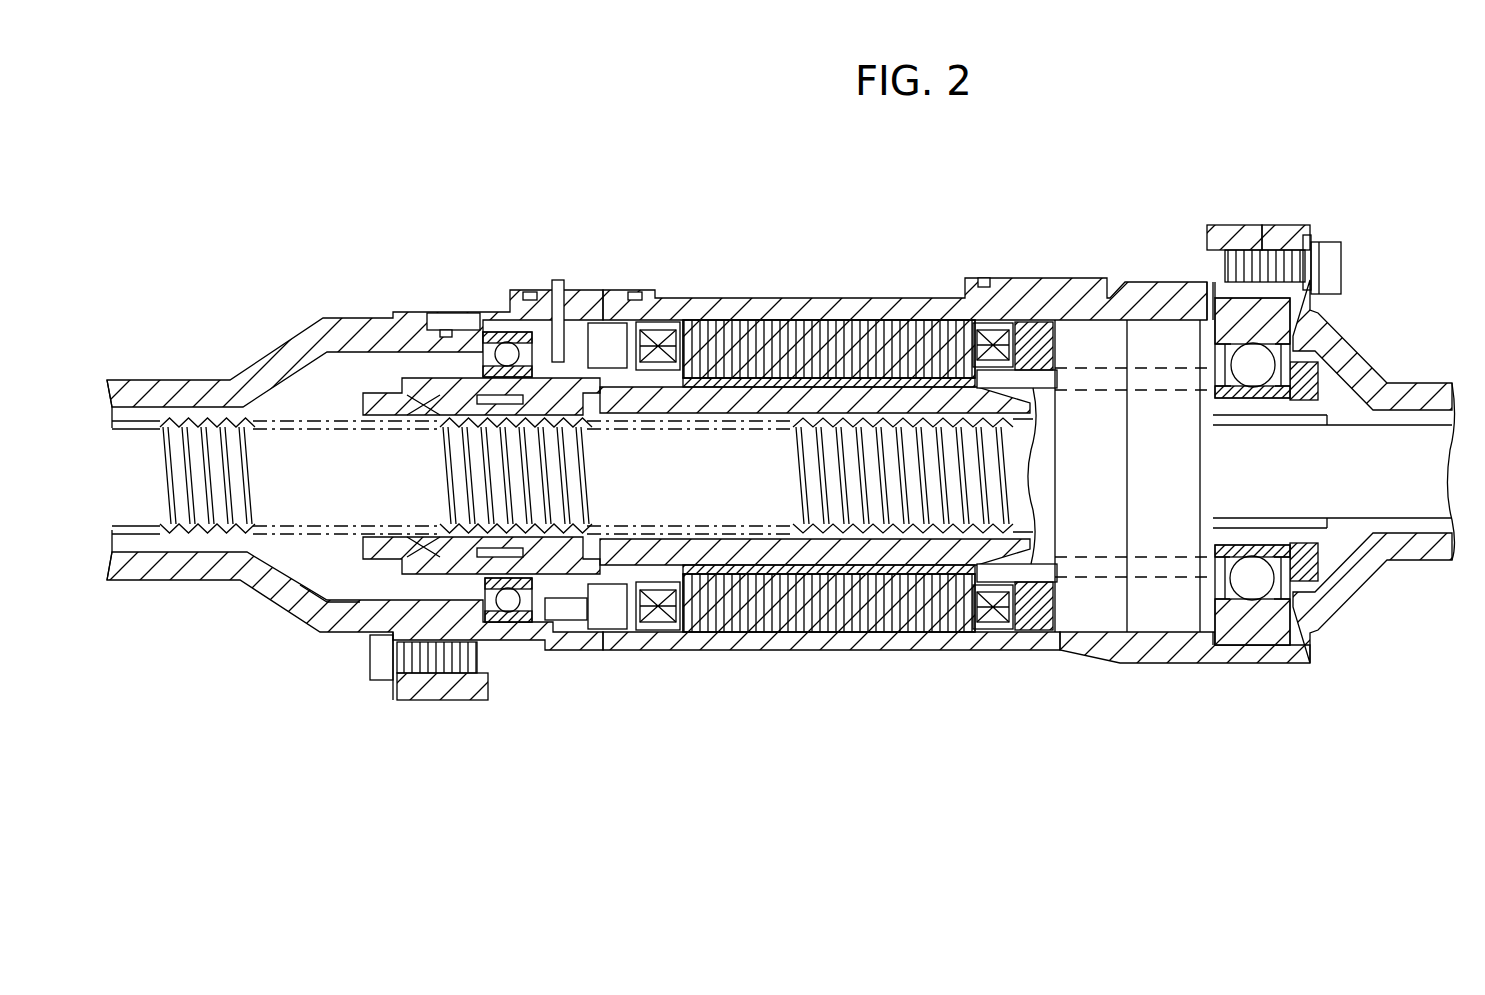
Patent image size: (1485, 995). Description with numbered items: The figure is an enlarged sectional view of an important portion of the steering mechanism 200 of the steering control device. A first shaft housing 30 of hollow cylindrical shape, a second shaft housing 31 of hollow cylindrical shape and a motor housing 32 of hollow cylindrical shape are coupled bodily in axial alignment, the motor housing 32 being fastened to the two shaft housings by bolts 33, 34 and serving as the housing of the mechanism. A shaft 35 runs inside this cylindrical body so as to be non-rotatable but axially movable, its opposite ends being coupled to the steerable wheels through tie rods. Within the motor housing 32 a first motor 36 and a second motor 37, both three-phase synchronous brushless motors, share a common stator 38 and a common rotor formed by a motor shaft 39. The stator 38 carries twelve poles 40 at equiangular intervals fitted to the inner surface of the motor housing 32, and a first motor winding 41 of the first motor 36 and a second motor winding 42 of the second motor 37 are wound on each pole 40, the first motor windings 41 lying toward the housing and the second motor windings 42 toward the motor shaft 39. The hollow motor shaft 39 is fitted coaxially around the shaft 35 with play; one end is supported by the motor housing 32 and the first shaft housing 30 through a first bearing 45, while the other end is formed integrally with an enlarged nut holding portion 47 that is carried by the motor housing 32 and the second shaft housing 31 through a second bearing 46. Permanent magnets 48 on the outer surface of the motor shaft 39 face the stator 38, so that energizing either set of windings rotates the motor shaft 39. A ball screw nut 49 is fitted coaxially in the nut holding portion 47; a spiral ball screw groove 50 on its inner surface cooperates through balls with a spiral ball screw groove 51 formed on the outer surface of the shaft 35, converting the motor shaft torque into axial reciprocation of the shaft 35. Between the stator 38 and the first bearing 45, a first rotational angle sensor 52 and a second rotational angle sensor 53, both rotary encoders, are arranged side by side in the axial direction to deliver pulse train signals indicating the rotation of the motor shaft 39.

The steering mechanism 200 is at (1279, 126).
The first shaft housing 30 is at (1375, 352).
The second shaft housing 31 is at (290, 355).
The motor housing 32 is at (706, 300).
The bolt 33 is at (1333, 266).
The bolt 34 is at (372, 666).
The shaft 35 is at (276, 530).
The first motor 36 is at (829, 459).
The second motor 37 is at (829, 518).
The stator 38 is at (757, 630).
The motor shaft 39 is at (875, 395).
The pole 40 is at (832, 634).
The first motor winding 41 is at (985, 320).
The second motor winding 42 is at (660, 340).
The first bearing 45 is at (1300, 640).
The second bearing 46 is at (510, 615).
The nut holding portion 47 is at (493, 628).
The permanent magnet 48 is at (795, 380).
The ball screw nut 49 is at (550, 578).
The ball screw groove 50 is at (400, 382).
The ball screw groove 51 is at (178, 420).
The first rotational angle sensor 52 is at (1070, 622).
The second rotational angle sensor 53 is at (1175, 622).